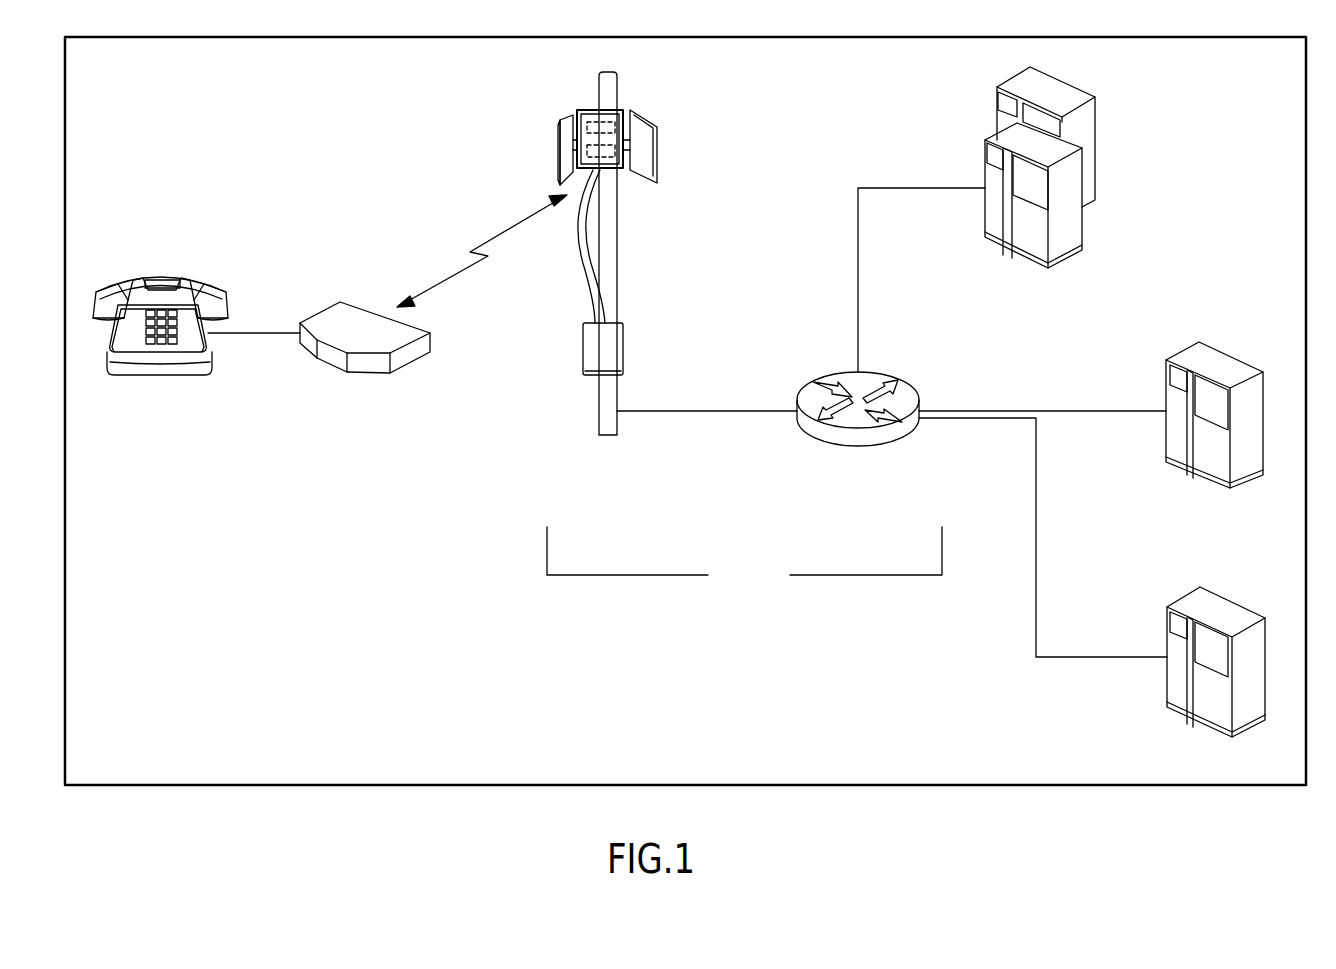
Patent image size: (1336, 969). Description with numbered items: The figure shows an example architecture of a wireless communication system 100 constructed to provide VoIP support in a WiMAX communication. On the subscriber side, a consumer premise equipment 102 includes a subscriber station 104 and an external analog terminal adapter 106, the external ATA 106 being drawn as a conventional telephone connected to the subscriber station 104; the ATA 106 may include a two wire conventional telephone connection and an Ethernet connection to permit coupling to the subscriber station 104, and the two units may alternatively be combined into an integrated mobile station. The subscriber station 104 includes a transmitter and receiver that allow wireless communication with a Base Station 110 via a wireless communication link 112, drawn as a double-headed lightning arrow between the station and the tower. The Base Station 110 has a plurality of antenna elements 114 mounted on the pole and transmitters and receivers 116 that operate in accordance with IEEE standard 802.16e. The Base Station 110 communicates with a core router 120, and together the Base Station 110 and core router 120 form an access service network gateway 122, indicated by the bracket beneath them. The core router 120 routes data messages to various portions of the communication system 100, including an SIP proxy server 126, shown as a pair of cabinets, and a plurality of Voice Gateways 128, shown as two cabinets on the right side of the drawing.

The wireless communication system 100 is at (253, 670).
The consumer premise equipment 102 is at (248, 457).
The subscriber station 104 is at (362, 305).
The external analog terminal adapter 106 is at (168, 267).
The Base Station 110 is at (692, 225).
The wireless communication link 112 is at (495, 233).
The antenna elements 114 is at (658, 150).
The transmitters and receivers 116 is at (625, 348).
The core router 120 is at (905, 377).
The access service network gateway 122 is at (750, 575).
The SIP proxy server 126 is at (1075, 85).
The Voice Gateways 128 is at (1237, 357).